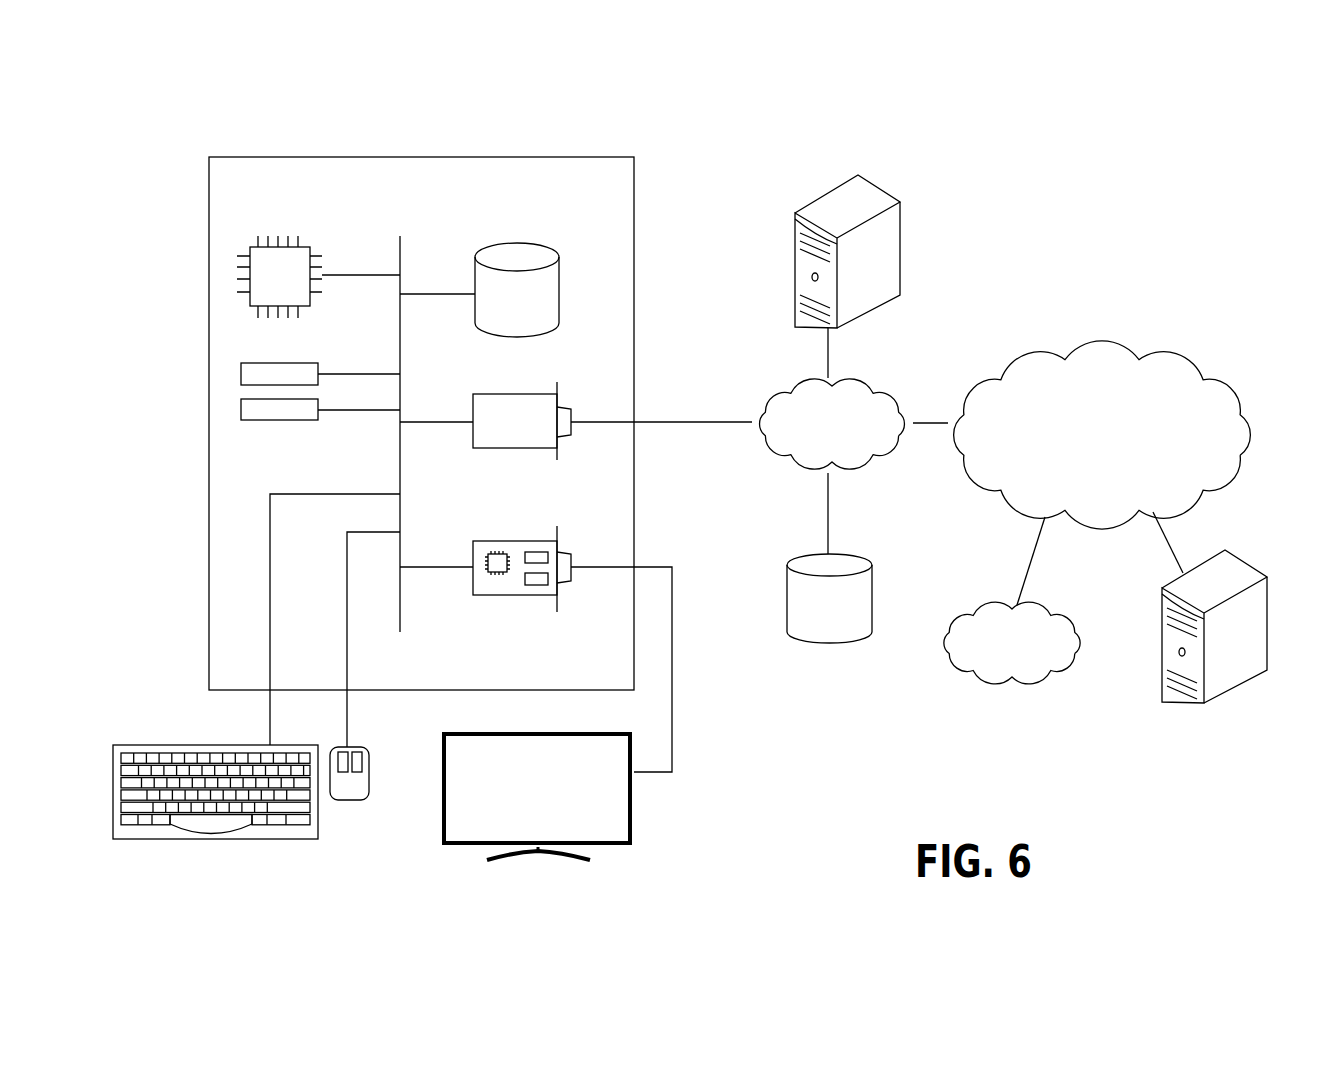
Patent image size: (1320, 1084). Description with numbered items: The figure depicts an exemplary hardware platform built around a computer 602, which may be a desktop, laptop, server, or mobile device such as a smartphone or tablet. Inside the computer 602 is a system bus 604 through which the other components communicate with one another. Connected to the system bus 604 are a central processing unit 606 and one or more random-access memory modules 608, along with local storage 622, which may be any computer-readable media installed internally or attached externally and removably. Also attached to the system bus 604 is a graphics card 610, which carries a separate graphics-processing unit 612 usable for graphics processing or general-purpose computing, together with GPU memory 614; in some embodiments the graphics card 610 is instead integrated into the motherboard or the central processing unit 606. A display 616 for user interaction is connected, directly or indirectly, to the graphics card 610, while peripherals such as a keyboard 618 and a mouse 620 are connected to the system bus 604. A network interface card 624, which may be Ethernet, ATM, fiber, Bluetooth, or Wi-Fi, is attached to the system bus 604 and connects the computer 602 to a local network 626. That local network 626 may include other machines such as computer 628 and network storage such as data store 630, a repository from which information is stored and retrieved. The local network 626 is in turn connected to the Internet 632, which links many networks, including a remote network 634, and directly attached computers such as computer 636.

The computer 602 is at (588, 157).
The system bus 604 is at (402, 245).
The central processing unit (CPU) 606 is at (304, 247).
The random-access memory (RAM) modules 608 is at (320, 405).
The graphics card 610 is at (473, 551).
The graphics-processing unit (GPU) 612 is at (496, 578).
The GPU memory 614 is at (534, 588).
The display 616 is at (634, 825).
The keyboard 618 is at (218, 839).
The mouse 620 is at (347, 800).
The local storage 622 is at (563, 276).
The network interface card (NIC) 624 is at (473, 405).
The local network 626 is at (883, 378).
The computer 628 is at (887, 191).
The data store 630 is at (863, 553).
The Internet 632 is at (1148, 340).
The remote network 634 is at (1073, 597).
The computer 636 is at (1245, 557).